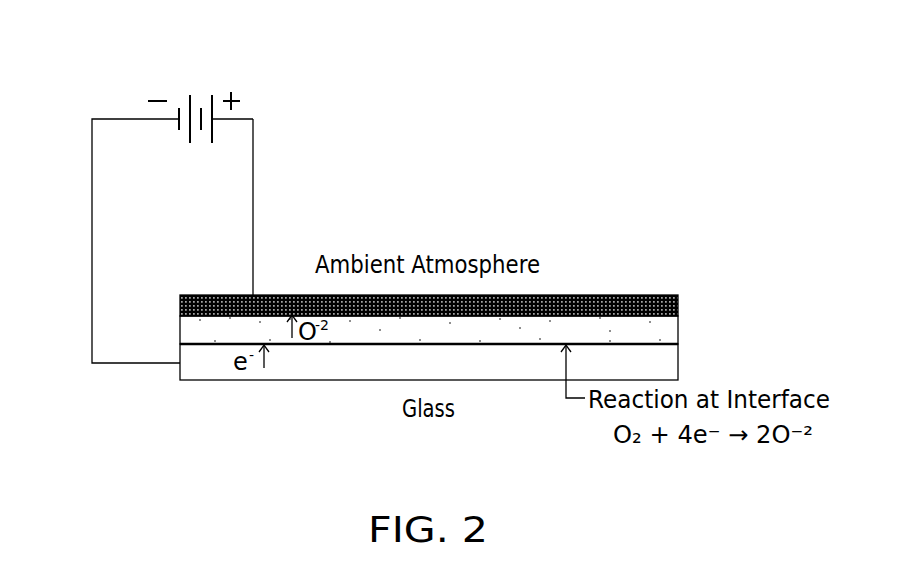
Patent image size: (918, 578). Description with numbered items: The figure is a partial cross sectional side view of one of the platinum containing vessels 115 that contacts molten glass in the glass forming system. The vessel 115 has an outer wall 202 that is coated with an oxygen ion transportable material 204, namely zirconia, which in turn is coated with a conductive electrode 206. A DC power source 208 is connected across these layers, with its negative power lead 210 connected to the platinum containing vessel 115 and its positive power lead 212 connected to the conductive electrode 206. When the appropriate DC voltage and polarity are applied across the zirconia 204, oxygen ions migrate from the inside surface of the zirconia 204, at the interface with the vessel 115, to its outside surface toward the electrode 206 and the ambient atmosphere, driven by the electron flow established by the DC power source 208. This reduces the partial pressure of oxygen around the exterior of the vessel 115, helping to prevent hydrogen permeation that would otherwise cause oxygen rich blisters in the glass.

The vessel 115 is at (679, 362).
The outer wall 202 is at (679, 345).
The oxygen ion transportable material 204 is at (679, 325).
The conductive electrode 206 is at (679, 300).
The DC power source 208 is at (195, 52).
The negative power lead 210 is at (91, 254).
The positive power lead 212 is at (255, 182).